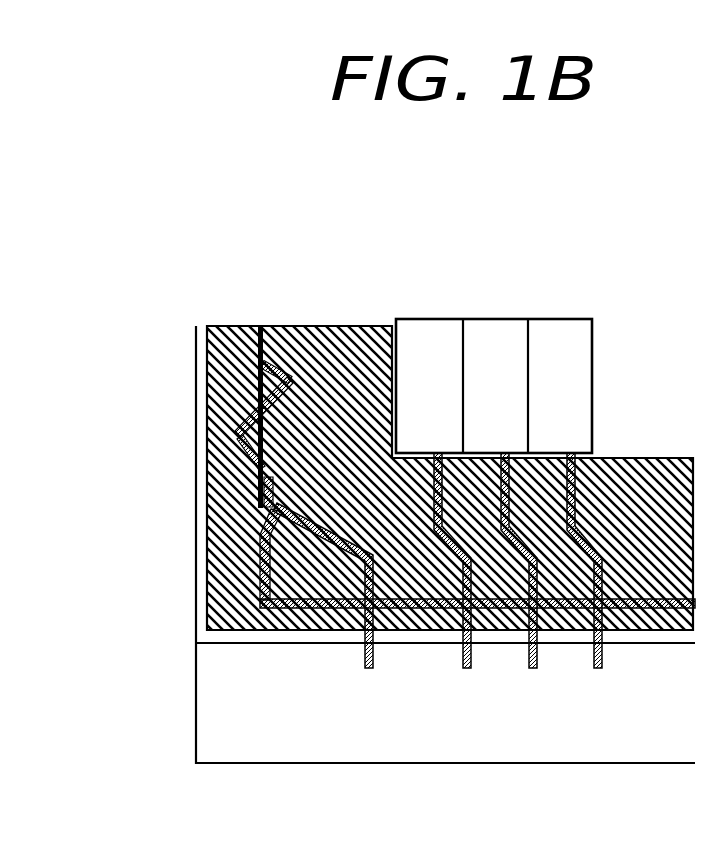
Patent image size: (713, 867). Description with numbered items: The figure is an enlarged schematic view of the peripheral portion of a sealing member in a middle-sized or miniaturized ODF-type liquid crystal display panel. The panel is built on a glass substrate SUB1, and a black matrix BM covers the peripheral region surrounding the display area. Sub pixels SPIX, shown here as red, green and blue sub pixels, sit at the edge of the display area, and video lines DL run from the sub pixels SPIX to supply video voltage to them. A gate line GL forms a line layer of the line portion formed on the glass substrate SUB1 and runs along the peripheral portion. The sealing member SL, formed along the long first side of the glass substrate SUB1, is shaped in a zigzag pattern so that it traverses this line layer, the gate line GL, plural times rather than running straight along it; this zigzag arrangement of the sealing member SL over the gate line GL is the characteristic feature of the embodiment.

The glass substrate SUB1 is at (225, 677).
The black matrix BM is at (222, 373).
The sub pixels SPIX is at (488, 318).
The sealing member SL is at (240, 440).
The gate lines GL is at (365, 672).
The video lines DL is at (597, 672).